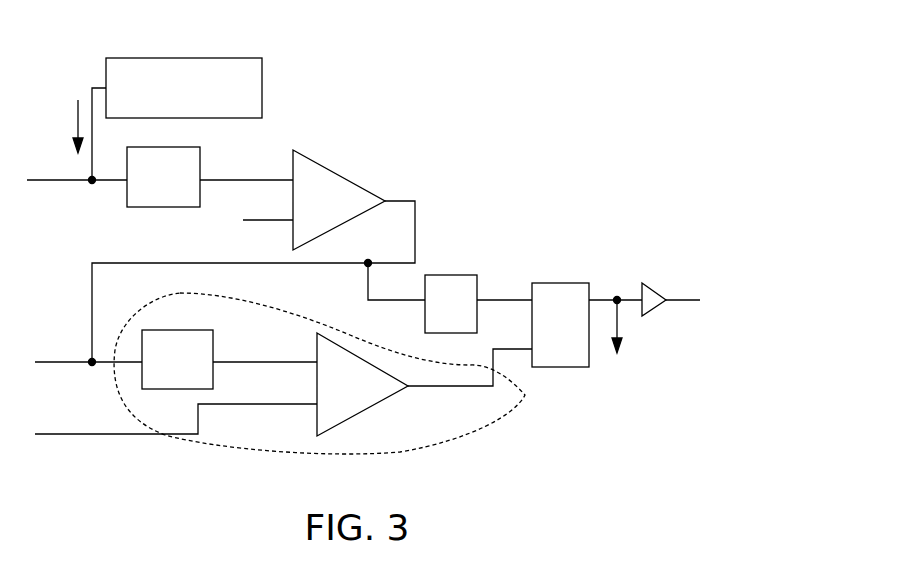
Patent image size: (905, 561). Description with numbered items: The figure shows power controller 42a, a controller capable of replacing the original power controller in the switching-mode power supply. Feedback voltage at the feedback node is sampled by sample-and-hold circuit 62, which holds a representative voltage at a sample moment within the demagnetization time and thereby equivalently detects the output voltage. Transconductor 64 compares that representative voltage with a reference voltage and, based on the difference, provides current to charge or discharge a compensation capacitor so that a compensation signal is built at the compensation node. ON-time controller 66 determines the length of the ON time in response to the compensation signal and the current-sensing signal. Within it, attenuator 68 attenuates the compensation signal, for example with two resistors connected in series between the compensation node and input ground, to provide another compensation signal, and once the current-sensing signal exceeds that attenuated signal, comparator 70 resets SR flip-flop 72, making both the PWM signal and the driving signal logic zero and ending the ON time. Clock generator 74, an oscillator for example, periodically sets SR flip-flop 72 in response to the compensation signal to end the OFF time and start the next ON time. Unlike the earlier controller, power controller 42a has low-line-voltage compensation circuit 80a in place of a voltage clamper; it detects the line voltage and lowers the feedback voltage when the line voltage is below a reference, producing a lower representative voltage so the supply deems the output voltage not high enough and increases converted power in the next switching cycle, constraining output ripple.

The power controller 42a is at (458, 78).
The low-line-voltage compensation circuit 80a is at (141, 58).
The sample-and-hold circuit 62 is at (177, 200).
The transconductor 64 is at (318, 163).
The clock generator 74 is at (441, 326).
The SR flip-flop 72 is at (552, 283).
The attenuator 68 is at (188, 384).
The comparator 70 is at (374, 406).
The ON-time controller 66 is at (456, 443).